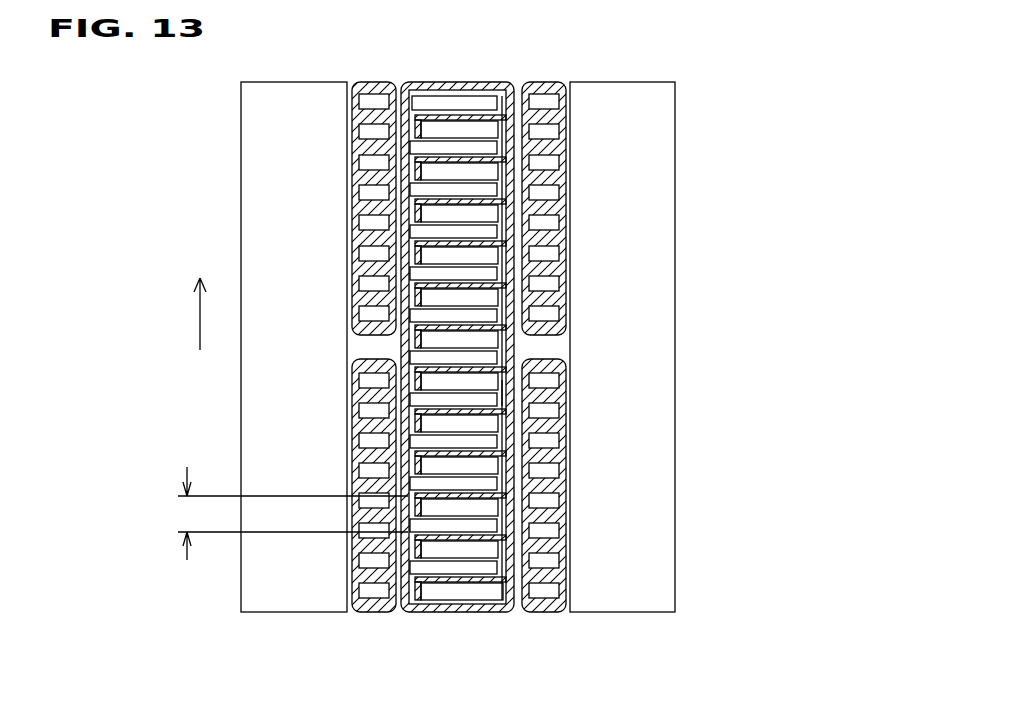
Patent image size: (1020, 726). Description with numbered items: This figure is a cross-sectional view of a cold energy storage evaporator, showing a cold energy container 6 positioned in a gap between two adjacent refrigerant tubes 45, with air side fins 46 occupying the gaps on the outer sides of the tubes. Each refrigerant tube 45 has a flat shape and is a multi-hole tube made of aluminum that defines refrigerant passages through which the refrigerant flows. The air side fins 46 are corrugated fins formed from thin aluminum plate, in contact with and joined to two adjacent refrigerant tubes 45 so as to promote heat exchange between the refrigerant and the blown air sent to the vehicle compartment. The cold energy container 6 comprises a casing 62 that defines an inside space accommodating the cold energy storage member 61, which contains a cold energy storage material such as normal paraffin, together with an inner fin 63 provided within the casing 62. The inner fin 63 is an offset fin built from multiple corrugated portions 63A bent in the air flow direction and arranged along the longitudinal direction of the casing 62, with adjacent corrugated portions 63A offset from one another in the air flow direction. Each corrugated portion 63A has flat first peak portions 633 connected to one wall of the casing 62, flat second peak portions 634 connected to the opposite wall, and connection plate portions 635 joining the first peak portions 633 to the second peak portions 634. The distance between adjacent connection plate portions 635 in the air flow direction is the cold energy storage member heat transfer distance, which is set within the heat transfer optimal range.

The cold energy container 6 is at (615, 310).
The refrigerant tube 45 is at (377, 82).
The air side fin 46 is at (250, 173).
The cold energy storage member 61 is at (483, 172).
The casing 62 is at (505, 258).
The inner fin 63 is at (478, 238).
The first peak portion 633 is at (510, 348).
The second peak portion 634 is at (447, 397).
The connection plate portion 635 is at (463, 376).
The corrugated portion 63A is at (619, 347).